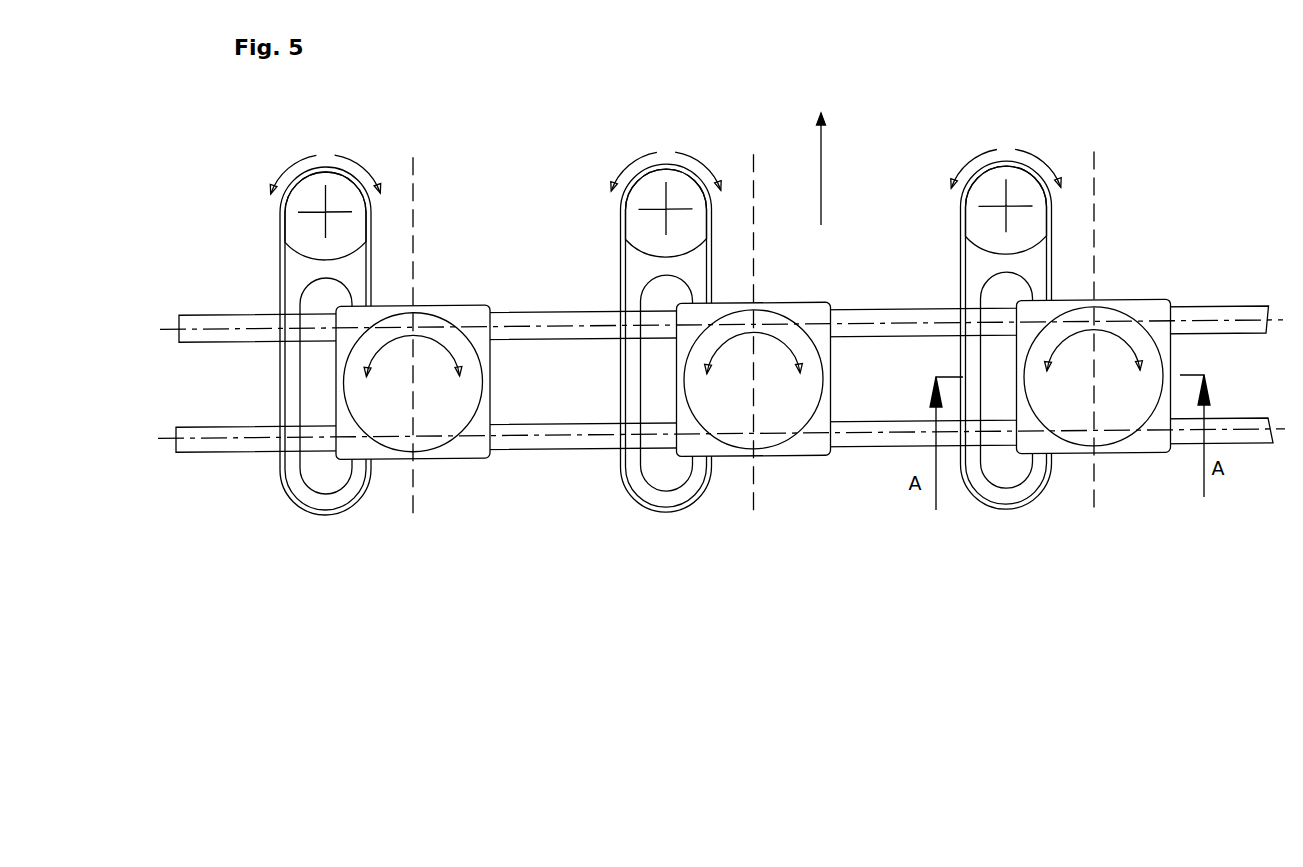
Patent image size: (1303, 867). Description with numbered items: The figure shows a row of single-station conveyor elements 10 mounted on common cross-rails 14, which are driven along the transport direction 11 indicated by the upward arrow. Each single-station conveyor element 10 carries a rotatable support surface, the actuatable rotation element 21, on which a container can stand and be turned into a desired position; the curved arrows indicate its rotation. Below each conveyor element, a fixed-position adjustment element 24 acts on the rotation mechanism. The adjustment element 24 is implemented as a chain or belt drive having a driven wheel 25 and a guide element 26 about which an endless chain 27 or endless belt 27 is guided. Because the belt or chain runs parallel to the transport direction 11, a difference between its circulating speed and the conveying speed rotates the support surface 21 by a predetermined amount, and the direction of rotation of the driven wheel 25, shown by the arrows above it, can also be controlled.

The single-station conveyor element 10 is at (793, 443).
The transport direction 11 is at (839, 169).
The cross-rails 14 is at (212, 428).
The rotation element 21 is at (440, 430).
The adjustment element 24 is at (265, 245).
The driven wheel 25 is at (345, 190).
The guide element 26 is at (319, 498).
The endless chain or endless belt 27 is at (283, 470).